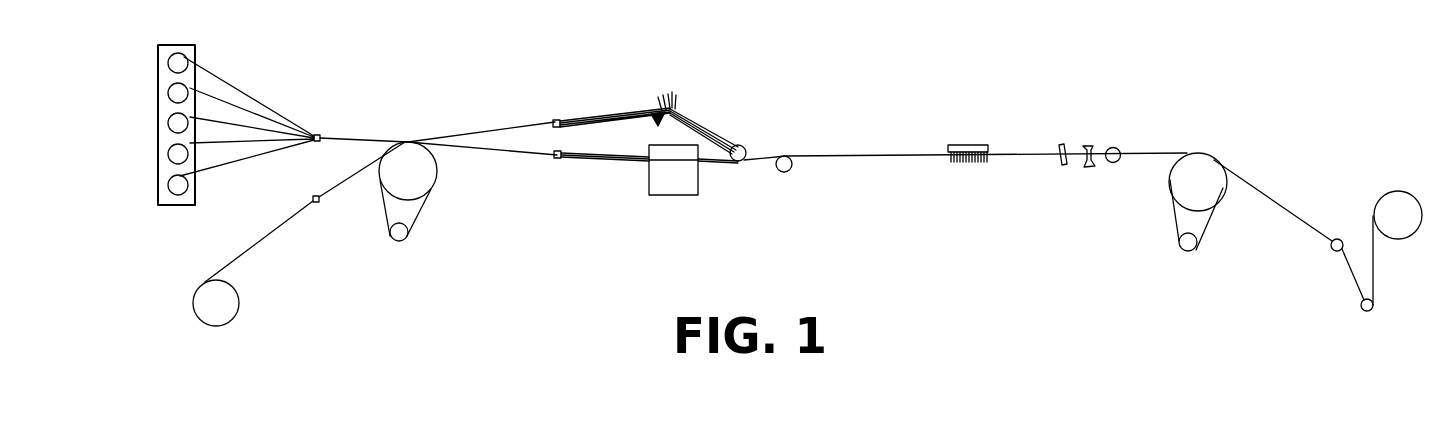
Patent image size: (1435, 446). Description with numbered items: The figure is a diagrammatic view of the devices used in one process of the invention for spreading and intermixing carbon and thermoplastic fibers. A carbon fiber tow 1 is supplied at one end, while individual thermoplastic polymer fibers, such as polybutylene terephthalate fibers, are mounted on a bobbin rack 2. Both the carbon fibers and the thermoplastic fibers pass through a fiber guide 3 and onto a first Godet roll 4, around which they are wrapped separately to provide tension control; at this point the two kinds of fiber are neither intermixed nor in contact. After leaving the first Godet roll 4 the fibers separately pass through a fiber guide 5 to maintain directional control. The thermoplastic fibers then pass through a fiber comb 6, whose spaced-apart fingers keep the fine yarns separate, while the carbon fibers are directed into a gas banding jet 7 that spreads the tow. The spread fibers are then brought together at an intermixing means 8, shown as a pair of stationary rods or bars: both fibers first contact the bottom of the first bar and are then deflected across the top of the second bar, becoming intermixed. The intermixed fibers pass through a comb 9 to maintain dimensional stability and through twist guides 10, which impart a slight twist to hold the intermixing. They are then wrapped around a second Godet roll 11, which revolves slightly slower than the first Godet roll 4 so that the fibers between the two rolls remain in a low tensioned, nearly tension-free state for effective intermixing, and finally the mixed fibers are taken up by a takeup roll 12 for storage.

The carbon fiber tow 1 is at (232, 323).
The bobbin rack 2 is at (177, 57).
The fiber guide 3 is at (314, 195).
The first Godet roll 4 is at (434, 190).
The fiber guide 5 is at (561, 153).
The fiber comb 6 is at (673, 96).
The gas banding jet 7 is at (677, 195).
The intermixing means 8 is at (745, 148).
The comb 9 is at (965, 144).
The twist guides 10 is at (1090, 145).
The second Godet roll 11 is at (1213, 160).
The takeup roll 12 is at (1398, 190).